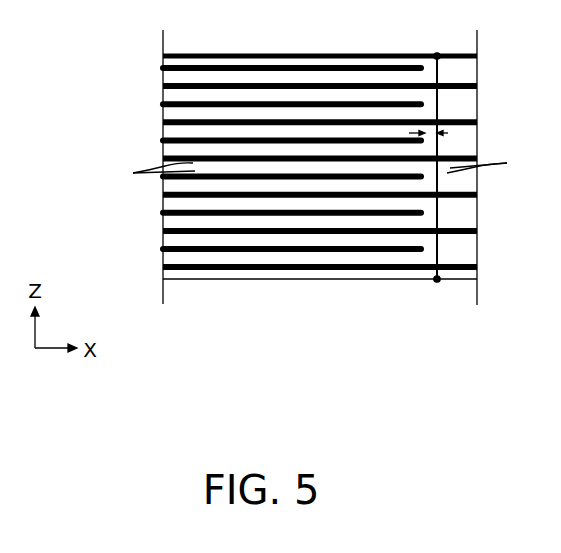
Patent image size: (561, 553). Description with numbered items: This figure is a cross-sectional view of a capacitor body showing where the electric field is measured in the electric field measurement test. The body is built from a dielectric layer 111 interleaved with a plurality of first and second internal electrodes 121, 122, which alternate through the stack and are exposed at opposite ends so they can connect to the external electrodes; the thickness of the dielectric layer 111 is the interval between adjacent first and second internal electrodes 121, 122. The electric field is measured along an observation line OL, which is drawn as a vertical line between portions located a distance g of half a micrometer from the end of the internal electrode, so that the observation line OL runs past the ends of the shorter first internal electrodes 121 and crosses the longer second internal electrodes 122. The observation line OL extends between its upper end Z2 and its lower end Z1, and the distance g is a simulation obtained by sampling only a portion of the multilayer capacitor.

The dielectric layer 111 is at (443, 76).
The first internal electrode 121 is at (267, 66).
The second internal electrode 122 is at (363, 83).
The observation line OL is at (442, 213).
The distance g is at (433, 140).
The first position Z1 is at (435, 292).
The second position Z2 is at (436, 45).